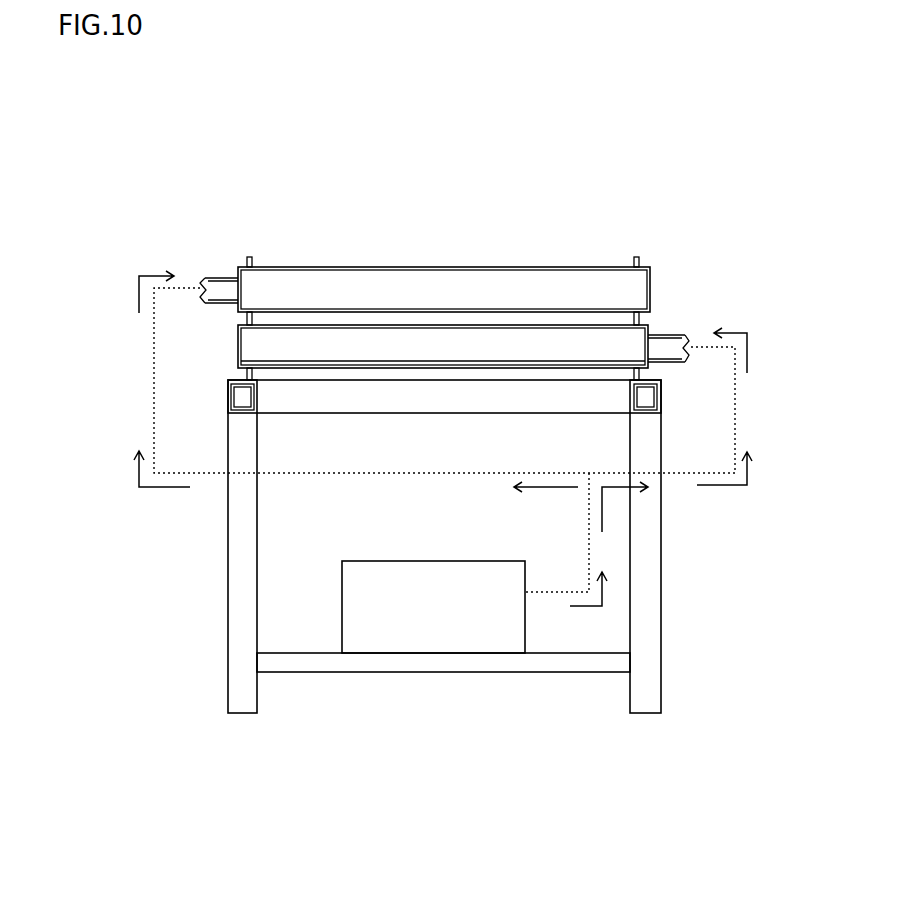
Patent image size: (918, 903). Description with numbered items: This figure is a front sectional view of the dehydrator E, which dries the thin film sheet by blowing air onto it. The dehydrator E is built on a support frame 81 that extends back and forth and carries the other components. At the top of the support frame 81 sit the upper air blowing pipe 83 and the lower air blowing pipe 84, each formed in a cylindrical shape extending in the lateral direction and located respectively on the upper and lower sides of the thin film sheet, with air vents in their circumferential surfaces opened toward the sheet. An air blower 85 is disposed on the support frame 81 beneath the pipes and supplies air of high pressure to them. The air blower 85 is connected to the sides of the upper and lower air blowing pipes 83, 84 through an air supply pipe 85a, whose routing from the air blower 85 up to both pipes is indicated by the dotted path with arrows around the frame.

The dehydrator E is at (213, 247).
The support frame 81 is at (227, 522).
The upper air blowing pipe 83 is at (435, 267).
The lower air blowing pipe 84 is at (525, 328).
The air blower 85 is at (525, 624).
The air supply pipe 85a is at (155, 382).